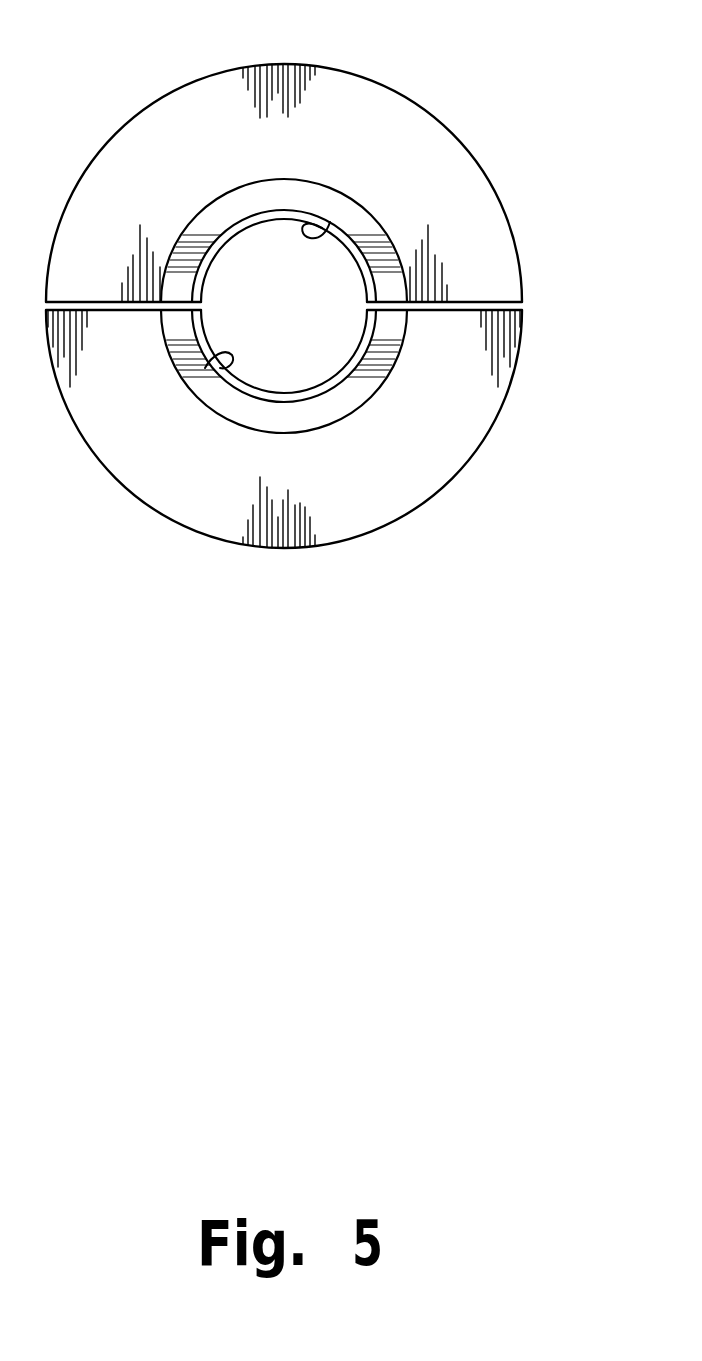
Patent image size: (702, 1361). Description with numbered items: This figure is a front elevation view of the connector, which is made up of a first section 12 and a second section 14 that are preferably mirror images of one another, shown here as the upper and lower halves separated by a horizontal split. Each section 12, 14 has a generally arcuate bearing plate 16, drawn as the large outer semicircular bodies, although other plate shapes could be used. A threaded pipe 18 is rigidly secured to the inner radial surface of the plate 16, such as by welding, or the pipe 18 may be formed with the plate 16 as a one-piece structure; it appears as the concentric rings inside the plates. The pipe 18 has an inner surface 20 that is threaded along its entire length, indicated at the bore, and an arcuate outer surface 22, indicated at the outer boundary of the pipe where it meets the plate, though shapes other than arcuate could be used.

The first section 12 is at (512, 198).
The second section 14 is at (484, 460).
The bearing plate 16 is at (432, 118).
The threaded pipe 18 is at (242, 198).
The inner surface 20 is at (330, 222).
The outer surface 22 is at (197, 207).